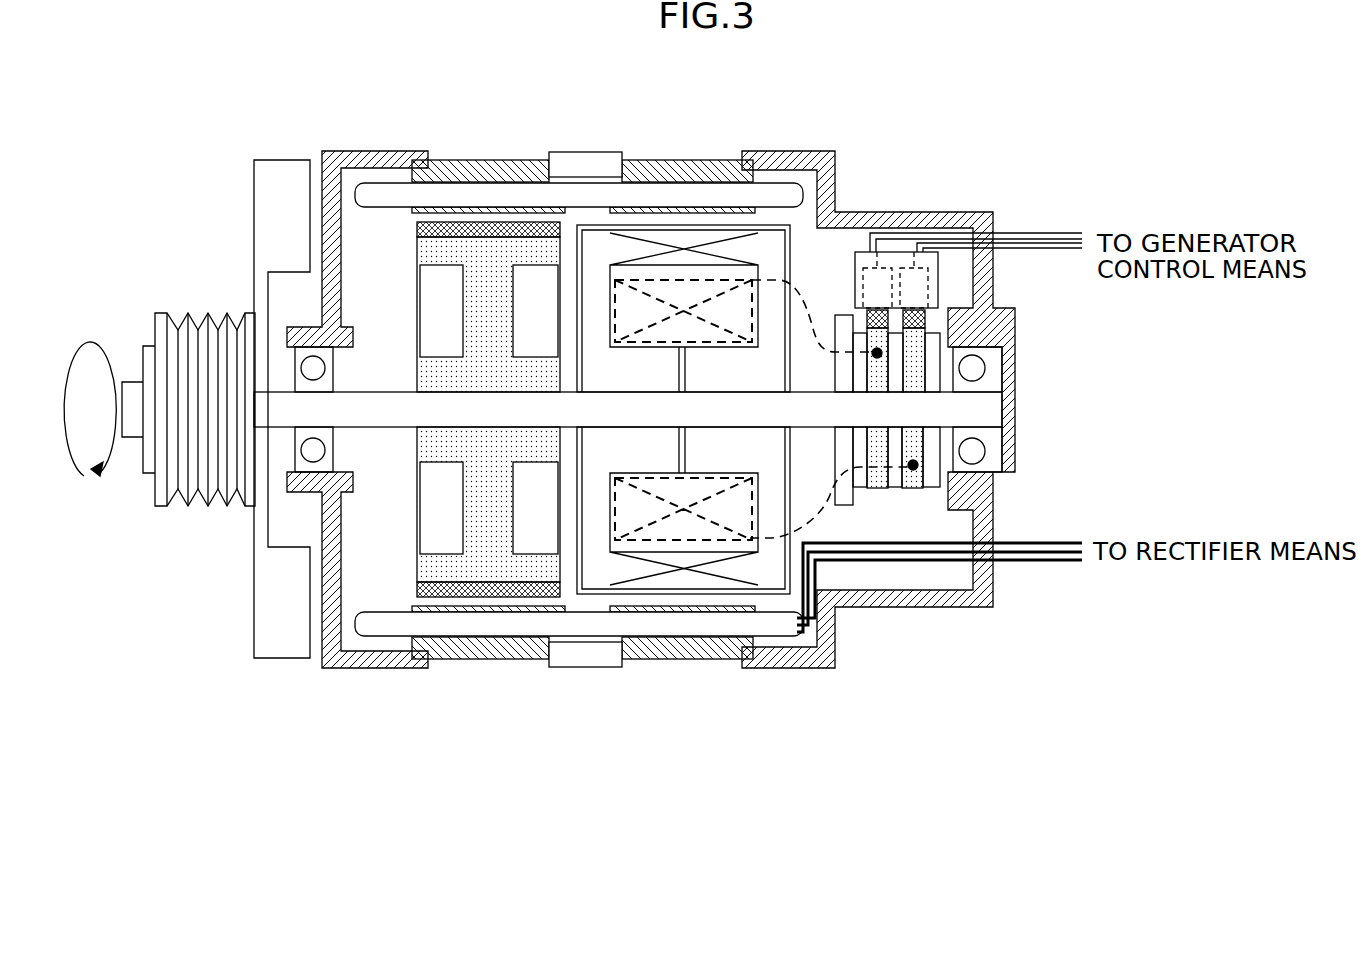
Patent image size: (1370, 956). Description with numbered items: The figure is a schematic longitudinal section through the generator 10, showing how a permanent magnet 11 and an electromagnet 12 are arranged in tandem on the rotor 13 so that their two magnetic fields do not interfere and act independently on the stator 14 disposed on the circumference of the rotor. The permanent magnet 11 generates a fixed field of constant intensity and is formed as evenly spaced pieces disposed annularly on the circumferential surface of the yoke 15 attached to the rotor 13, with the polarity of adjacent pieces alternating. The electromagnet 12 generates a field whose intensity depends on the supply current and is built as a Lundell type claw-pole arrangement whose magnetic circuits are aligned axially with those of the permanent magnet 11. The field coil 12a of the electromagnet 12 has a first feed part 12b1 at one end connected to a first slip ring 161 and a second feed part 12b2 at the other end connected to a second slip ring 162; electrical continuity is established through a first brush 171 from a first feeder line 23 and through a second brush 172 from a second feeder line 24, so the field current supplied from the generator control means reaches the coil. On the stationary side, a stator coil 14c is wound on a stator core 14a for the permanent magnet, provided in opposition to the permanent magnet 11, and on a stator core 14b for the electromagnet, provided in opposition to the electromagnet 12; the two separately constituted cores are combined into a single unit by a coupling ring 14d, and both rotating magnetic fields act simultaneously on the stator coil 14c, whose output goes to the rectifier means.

The generator 10 is at (205, 196).
The permanent magnet 11 is at (417, 228).
The electromagnet 12 is at (802, 262).
The field coil 12a is at (737, 280).
The first feed part 12b1 is at (882, 352).
The second feed part 12b2 is at (918, 466).
The rotor 13 is at (387, 393).
The stator 14 is at (579, 418).
The stator core for a permanent magnet 14a is at (489, 160).
The stator core for an electromagnet 14b is at (692, 160).
The stator coil 14c is at (383, 188).
The coupling ring 14d is at (582, 158).
The yoke 15 is at (420, 516).
The first slip ring 161 is at (873, 490).
The second slip ring 162 is at (918, 490).
The first brush 171 is at (878, 312).
The second brush 172 is at (912, 312).
The first feeder line 23 is at (1012, 236).
The second feeder line 24 is at (1012, 243).